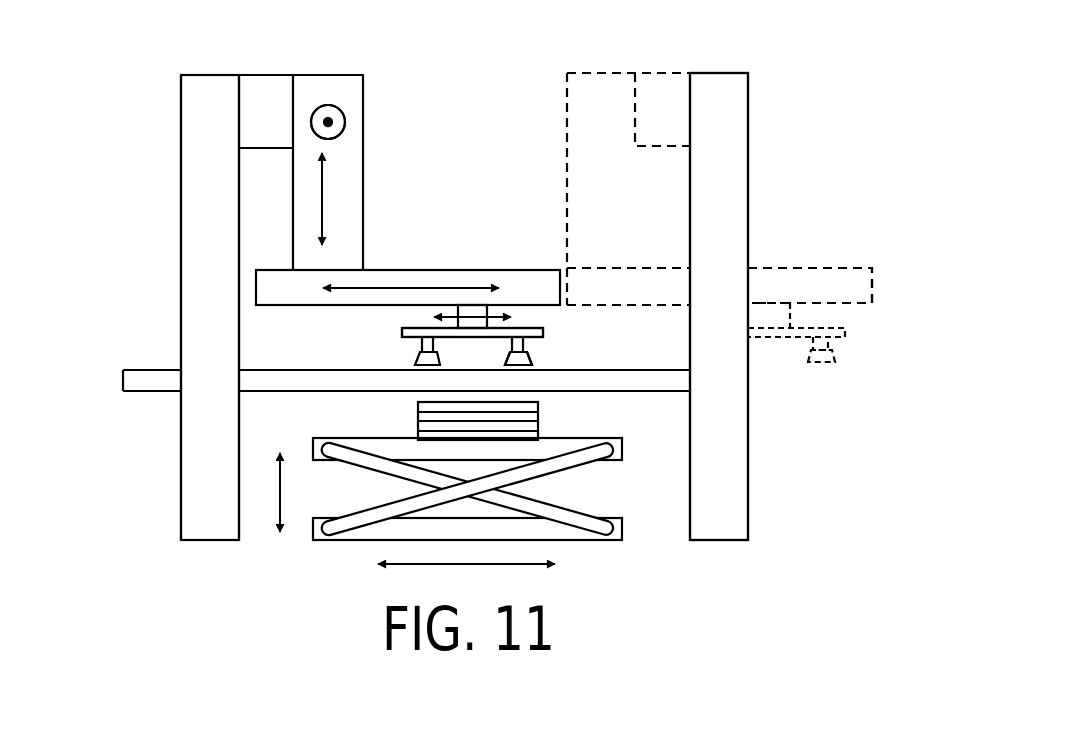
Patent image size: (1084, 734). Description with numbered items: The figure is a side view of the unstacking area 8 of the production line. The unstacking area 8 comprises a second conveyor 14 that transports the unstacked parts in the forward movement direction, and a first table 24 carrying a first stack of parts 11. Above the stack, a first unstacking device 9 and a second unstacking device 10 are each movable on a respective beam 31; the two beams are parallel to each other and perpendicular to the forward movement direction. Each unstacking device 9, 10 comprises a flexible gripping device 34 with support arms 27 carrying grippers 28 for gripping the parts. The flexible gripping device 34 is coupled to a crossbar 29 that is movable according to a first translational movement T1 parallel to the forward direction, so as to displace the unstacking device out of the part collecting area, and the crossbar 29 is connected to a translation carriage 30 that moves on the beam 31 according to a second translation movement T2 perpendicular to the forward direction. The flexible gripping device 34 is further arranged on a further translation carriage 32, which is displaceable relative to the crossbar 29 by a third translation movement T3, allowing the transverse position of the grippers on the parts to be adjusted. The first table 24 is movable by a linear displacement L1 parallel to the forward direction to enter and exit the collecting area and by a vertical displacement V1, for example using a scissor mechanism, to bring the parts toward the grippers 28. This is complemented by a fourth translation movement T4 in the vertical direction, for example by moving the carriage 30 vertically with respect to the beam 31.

The unstacking area 8 is at (755, 56).
The first unstacking device 9 is at (418, 160).
The second unstacking device 10 is at (772, 258).
The first stack of parts 11 is at (418, 422).
The second conveyor 14 is at (158, 383).
The first table 24 is at (500, 452).
The support arms 27 is at (527, 347).
The grippers 28 is at (535, 365).
The crossbar 29 is at (425, 280).
The translation carriage 30 is at (323, 103).
The beam 31 is at (262, 107).
The further translation carriage 32 is at (440, 332).
The flexible gripping device 34 is at (376, 334).
The first translational movement T1 is at (380, 282).
The second translation movement T2 is at (342, 112).
The third translation movement T3 is at (472, 325).
The fourth translation movement T4 is at (318, 196).
The vertical displacement V1 is at (263, 492).
The linear displacement L1 is at (486, 566).